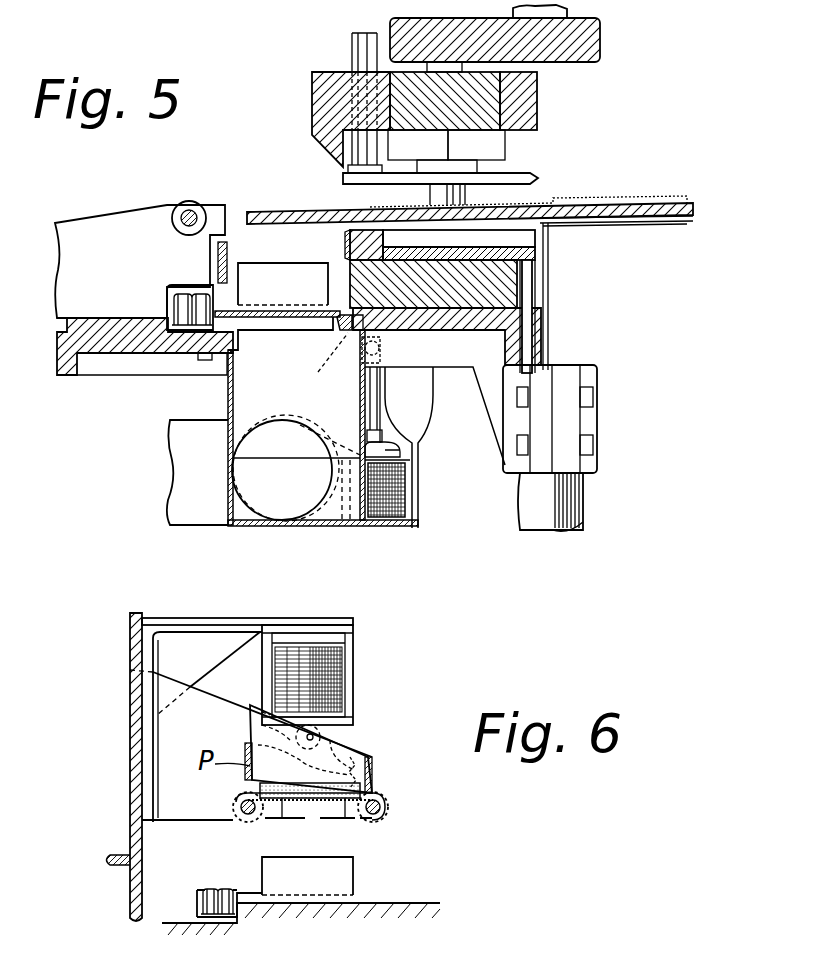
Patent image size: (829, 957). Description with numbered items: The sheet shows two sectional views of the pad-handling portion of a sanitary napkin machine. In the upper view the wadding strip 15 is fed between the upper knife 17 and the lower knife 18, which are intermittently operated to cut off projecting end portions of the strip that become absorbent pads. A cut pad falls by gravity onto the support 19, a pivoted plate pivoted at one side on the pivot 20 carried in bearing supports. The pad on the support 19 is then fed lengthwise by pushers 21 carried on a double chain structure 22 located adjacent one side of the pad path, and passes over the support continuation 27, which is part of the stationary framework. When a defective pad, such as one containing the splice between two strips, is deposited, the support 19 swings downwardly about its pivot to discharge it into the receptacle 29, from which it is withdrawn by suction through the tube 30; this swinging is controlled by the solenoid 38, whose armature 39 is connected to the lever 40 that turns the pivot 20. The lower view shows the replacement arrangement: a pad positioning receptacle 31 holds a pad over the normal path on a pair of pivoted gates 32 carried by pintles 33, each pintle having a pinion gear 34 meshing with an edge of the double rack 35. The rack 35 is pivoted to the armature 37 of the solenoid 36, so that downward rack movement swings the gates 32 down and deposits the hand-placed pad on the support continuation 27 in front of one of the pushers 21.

In FIG. 5, the wadding strip 15 is at (637, 201).
In FIG. 5, the upper knife 17 is at (340, 167).
In FIG. 5, the lower knife 18 is at (344, 248).
In FIG. 5, the support 19 is at (286, 314).
In FIG. 5, the pivot 20 is at (340, 333).
In FIG. 5, the pushers 21 is at (266, 272).
In FIG. 6, the pushers 21 is at (296, 880).
In FIG. 5, the double chain structure 22 is at (192, 297).
In FIG. 5, the receptacle 29 is at (250, 467).
In FIG. 5, the tube 30 is at (170, 436).
In FIG. 5, the solenoid 38 is at (405, 498).
In FIG. 5, the armature 39 is at (412, 446).
In FIG. 5, the lever 40 is at (336, 390).
In FIG. 6, the support continuation 27 is at (322, 905).
In FIG. 6, the pad positioning receptacle 31 is at (350, 745).
In FIG. 6, the pivoted gates 32 is at (283, 818).
In FIG. 6, the pintles 33 is at (242, 818).
In FIG. 6, the pinion gear 34 is at (247, 825).
In FIG. 6, the double rack 35 is at (365, 752).
In FIG. 6, the solenoid 36 is at (345, 676).
In FIG. 6, the armature 37 is at (345, 735).